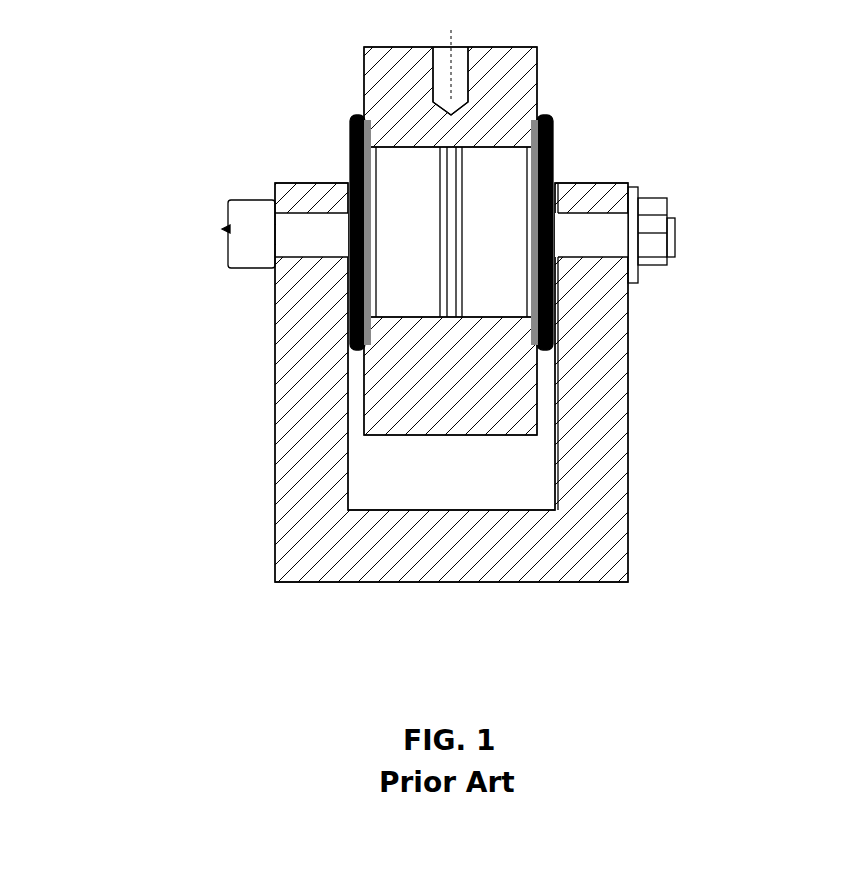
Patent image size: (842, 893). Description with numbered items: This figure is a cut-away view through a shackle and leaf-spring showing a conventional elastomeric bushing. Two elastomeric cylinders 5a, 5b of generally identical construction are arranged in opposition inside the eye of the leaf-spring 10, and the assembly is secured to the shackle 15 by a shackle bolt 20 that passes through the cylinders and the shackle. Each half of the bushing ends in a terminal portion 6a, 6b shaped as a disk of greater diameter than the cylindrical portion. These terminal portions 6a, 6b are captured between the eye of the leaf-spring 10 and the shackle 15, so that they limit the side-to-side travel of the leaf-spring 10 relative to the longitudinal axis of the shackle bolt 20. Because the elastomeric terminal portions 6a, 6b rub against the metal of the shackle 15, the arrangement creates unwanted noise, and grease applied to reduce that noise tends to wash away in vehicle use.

The leaf-spring 10 is at (364, 73).
The elastomeric cylinder 5a is at (393, 201).
The elastomeric cylinder 5b is at (505, 178).
The terminal portion 6a is at (352, 288).
The terminal portion 6b is at (553, 300).
The shackle bolt 20 is at (600, 242).
The shackle 15 is at (628, 502).